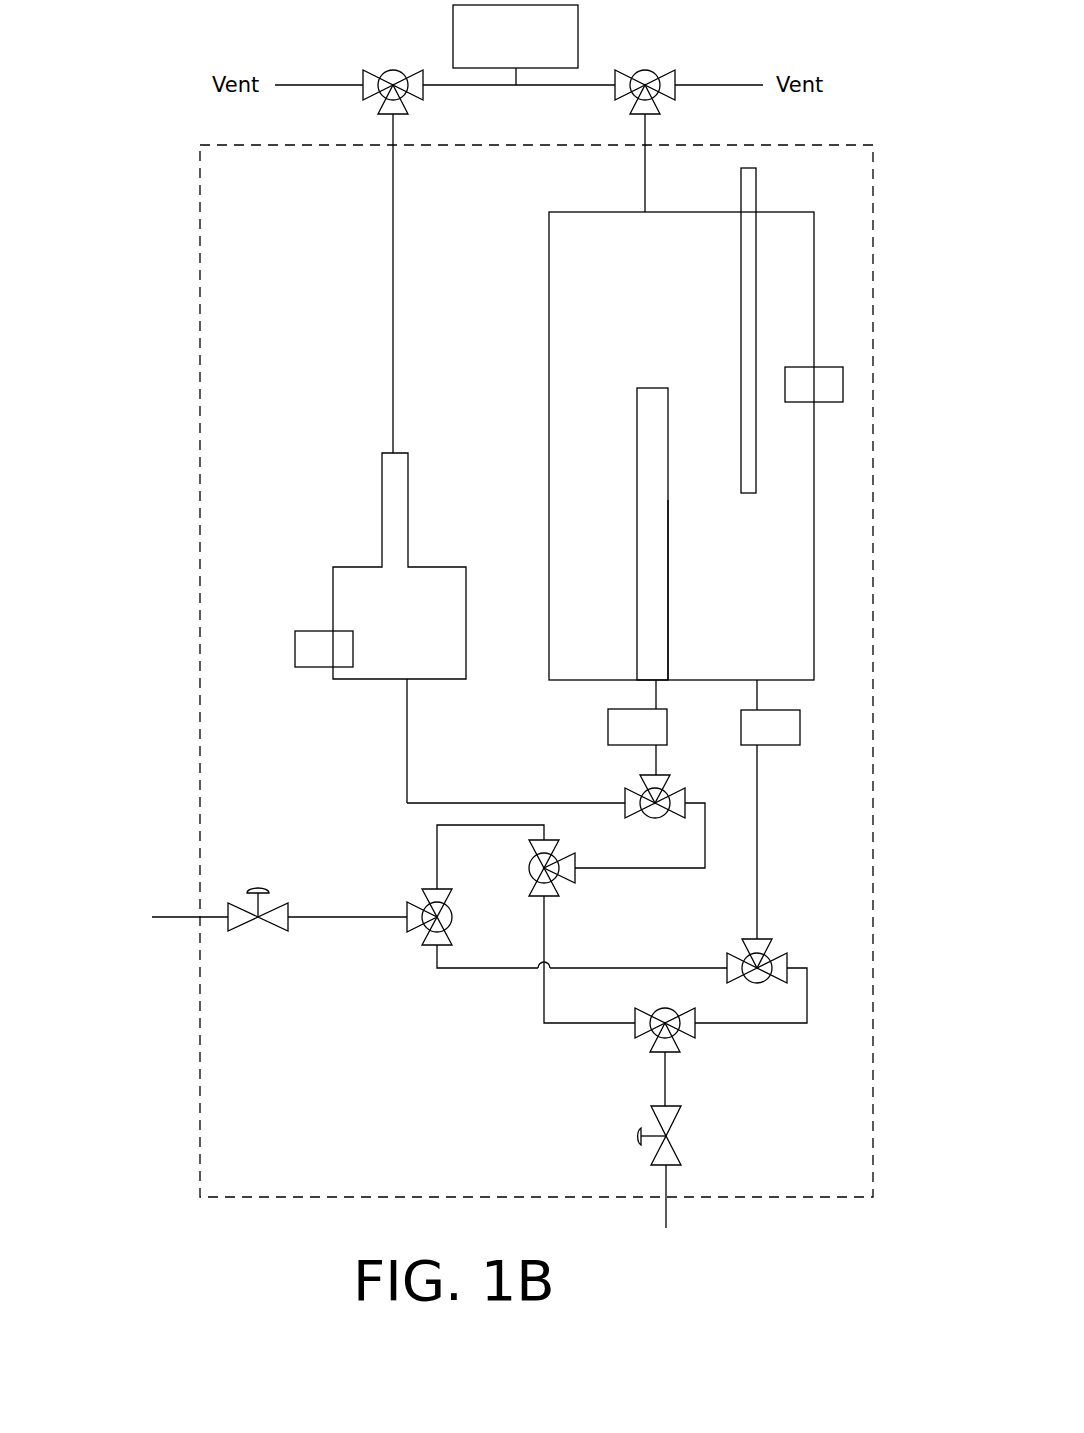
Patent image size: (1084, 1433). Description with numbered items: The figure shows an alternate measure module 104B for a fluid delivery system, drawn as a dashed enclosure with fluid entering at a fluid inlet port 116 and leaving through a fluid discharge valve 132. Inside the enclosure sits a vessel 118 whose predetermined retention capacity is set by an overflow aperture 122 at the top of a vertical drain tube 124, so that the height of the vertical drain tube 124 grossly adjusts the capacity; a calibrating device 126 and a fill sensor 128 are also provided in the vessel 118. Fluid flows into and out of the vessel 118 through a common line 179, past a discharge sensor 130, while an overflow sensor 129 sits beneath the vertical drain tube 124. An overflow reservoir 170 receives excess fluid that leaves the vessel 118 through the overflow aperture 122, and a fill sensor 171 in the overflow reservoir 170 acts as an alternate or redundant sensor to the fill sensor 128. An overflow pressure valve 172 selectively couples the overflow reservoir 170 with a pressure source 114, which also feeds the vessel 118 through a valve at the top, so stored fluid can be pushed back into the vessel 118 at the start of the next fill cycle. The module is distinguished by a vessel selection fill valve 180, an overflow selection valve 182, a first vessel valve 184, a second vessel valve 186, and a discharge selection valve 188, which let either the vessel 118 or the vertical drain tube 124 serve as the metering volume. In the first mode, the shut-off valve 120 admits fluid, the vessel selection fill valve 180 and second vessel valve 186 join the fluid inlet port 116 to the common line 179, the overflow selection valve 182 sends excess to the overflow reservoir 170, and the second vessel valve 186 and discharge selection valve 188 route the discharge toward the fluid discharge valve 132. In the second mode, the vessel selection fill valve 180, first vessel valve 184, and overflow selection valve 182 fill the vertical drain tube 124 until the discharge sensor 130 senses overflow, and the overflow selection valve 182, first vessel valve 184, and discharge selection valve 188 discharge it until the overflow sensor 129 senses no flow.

The pressure source 114 is at (580, 38).
The overflow pressure valve 172 is at (418, 93).
The discharge sensor 130 is at (672, 93).
The measure module 104B is at (318, 1197).
The vessel 118 is at (549, 275).
The calibrating device 126 is at (752, 176).
The fill sensor 128 is at (793, 402).
The overflow aperture 122 is at (651, 388).
The vertical drain tube 124 is at (660, 556).
The overflow reservoir 170 is at (357, 567).
The fill sensor 171 is at (308, 667).
The overflow sensor 129 is at (608, 720).
The overflow selection valve 182 is at (625, 797).
The first vessel valve 184 is at (565, 876).
The vessel selection fill valve 180 is at (420, 940).
The shut-off valve 120 is at (288, 904).
The fluid inlet port 116 is at (190, 917).
The common line 179 is at (757, 823).
The second vessel valve 186 is at (790, 955).
The discharge selection valve 188 is at (680, 1045).
The fluid discharge valve 132 is at (678, 1113).